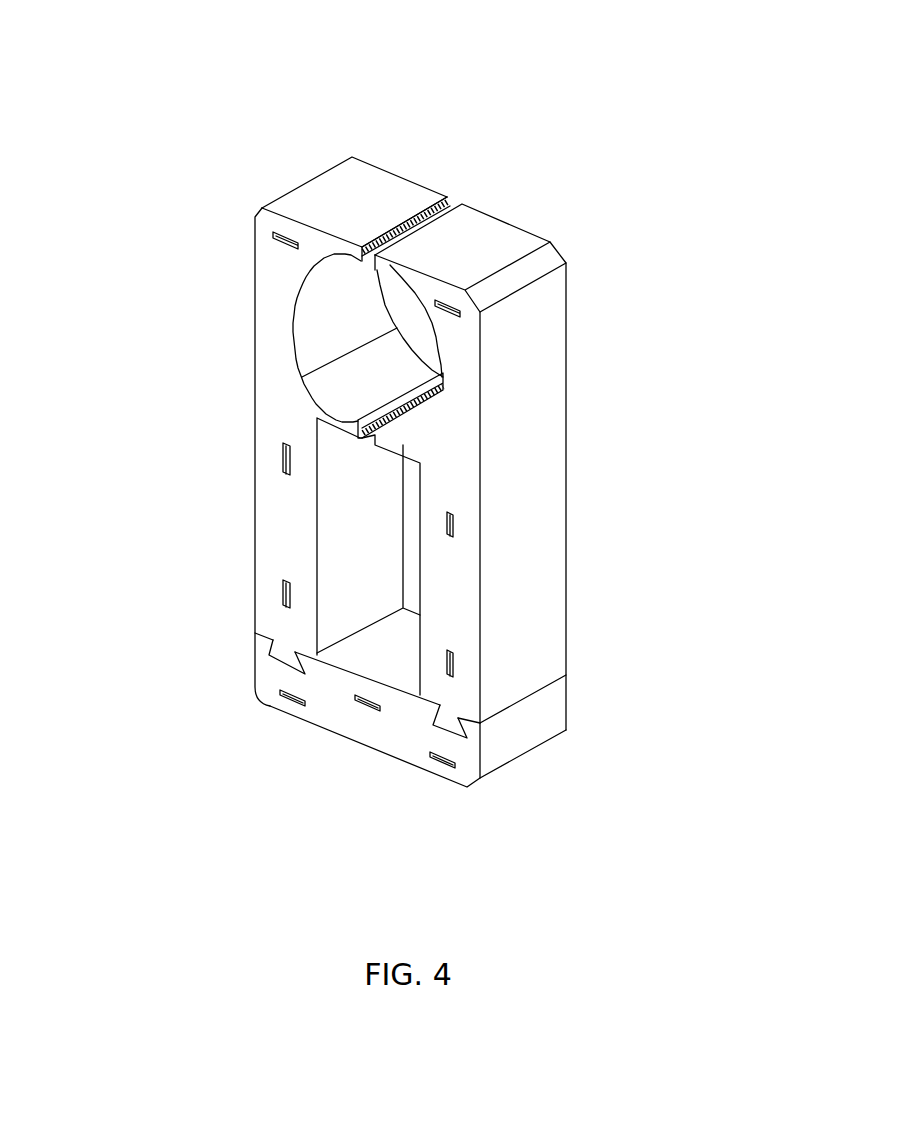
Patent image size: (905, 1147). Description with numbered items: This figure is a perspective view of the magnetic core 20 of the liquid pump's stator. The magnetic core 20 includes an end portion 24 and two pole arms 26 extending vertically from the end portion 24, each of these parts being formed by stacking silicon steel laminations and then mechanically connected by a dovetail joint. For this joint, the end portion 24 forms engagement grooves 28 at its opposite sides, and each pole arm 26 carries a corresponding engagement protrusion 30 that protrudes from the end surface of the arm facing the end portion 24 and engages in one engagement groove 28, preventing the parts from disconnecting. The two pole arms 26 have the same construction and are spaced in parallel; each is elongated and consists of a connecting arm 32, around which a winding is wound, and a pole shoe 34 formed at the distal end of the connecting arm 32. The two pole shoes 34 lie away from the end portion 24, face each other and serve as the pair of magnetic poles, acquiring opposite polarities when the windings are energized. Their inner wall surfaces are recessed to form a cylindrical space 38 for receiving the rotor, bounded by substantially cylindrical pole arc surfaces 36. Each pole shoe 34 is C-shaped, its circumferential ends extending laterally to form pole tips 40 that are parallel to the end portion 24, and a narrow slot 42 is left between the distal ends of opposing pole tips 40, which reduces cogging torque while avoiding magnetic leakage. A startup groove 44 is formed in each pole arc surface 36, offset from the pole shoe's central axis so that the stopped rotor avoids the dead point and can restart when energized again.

The magnetic core 20 is at (640, 156).
The end portion 24 is at (338, 692).
The pole arm 26 is at (540, 482).
The engagement groove 28 is at (440, 728).
The engagement protrusion 30 is at (455, 737).
The connecting arm 32 is at (287, 542).
The pole shoe 34 is at (273, 343).
The pole arc surface 36 is at (312, 292).
The space 38 is at (425, 343).
The pole tip 40 is at (392, 205).
The slot 42 is at (448, 196).
The startup groove 44 is at (337, 392).